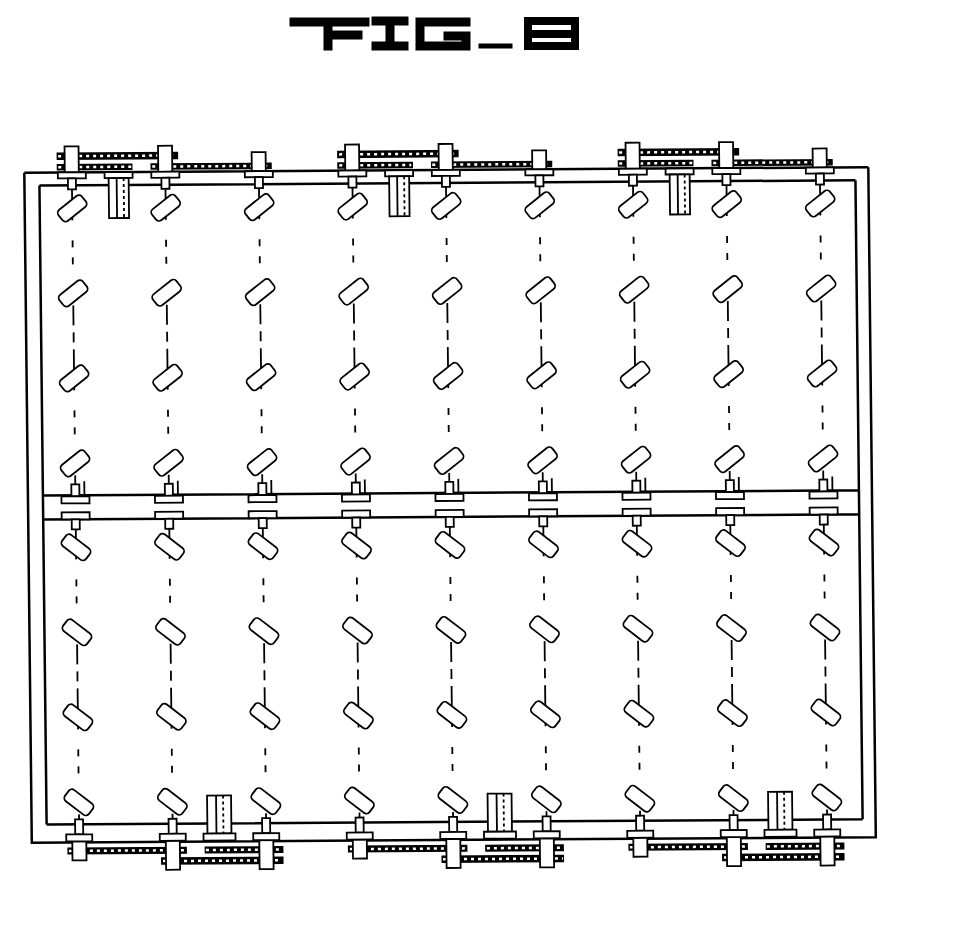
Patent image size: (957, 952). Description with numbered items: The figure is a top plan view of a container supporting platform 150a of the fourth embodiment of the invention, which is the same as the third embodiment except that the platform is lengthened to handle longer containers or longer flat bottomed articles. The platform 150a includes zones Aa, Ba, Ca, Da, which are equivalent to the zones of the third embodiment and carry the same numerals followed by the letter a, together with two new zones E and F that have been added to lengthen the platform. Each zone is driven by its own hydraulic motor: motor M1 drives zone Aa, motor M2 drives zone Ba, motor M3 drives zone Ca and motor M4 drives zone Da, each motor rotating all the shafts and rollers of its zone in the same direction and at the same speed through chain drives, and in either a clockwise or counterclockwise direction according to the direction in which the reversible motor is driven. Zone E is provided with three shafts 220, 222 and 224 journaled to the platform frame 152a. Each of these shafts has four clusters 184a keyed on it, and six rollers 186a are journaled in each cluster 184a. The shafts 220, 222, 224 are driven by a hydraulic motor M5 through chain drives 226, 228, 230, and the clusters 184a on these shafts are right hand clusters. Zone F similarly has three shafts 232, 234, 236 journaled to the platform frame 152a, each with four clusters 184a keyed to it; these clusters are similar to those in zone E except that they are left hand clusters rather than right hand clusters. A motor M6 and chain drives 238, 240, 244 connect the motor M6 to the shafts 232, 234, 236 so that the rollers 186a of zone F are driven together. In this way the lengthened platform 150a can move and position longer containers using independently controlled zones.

The platform 150a is at (572, 162).
The platform frame 152a is at (289, 176).
The cluster 184a is at (717, 220).
The roller 186a is at (633, 283).
The shaft 220 is at (633, 182).
The shaft 222 is at (730, 184).
The shaft 224 is at (821, 181).
The chain drive 226 is at (657, 150).
The chain drive 228 is at (718, 157).
The chain drive 230 is at (808, 157).
The shaft 232 is at (633, 520).
The shaft 234 is at (728, 520).
The shaft 236 is at (820, 520).
The chain drive 238 is at (815, 854).
The chain drive 240 is at (780, 862).
The chain drive 244 is at (683, 853).
The hydraulic motor M1 is at (116, 219).
The hydraulic motor M2 is at (397, 217).
The hydraulic motor M3 is at (225, 795).
The hydraulic motor M4 is at (500, 795).
The hydraulic motor M5 is at (697, 170).
The motor M6 is at (782, 795).
The zone Aa is at (232, 348).
The zone Ba is at (510, 348).
The zone Ca is at (232, 608).
The zone Da is at (520, 611).
The zone E is at (695, 353).
The zone F is at (695, 611).